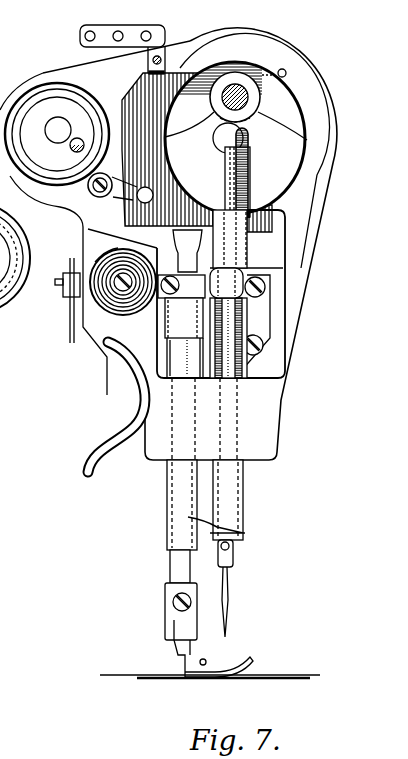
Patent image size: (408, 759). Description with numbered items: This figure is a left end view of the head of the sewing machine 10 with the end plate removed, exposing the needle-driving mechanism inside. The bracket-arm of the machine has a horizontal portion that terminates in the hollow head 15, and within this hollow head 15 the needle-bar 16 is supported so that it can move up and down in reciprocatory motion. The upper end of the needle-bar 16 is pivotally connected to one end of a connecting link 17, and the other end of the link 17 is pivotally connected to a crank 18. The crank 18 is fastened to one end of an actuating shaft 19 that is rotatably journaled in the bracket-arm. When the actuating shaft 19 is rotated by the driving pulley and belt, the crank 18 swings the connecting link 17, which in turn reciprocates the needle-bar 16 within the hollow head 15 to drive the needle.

The sewing machine 10 is at (292, 370).
The hollow head 15 is at (263, 420).
The needle-bar 16 is at (236, 556).
The connecting link 17 is at (276, 200).
The crank 18 is at (283, 167).
The actuating shaft 19 is at (222, 140).